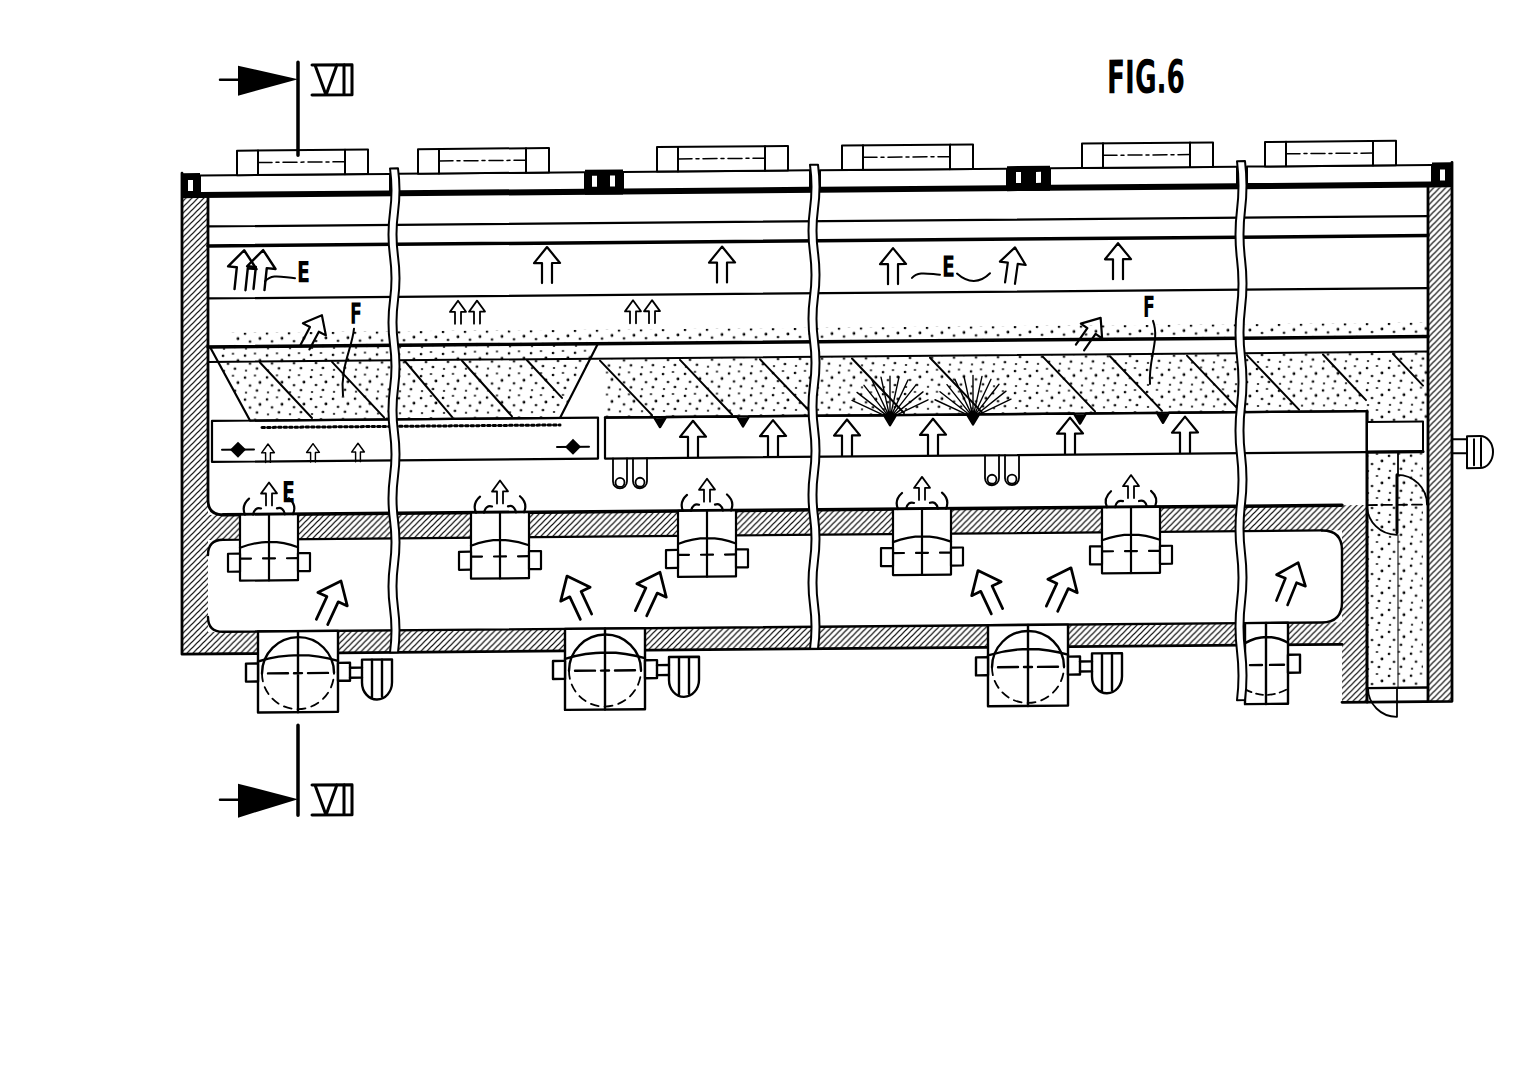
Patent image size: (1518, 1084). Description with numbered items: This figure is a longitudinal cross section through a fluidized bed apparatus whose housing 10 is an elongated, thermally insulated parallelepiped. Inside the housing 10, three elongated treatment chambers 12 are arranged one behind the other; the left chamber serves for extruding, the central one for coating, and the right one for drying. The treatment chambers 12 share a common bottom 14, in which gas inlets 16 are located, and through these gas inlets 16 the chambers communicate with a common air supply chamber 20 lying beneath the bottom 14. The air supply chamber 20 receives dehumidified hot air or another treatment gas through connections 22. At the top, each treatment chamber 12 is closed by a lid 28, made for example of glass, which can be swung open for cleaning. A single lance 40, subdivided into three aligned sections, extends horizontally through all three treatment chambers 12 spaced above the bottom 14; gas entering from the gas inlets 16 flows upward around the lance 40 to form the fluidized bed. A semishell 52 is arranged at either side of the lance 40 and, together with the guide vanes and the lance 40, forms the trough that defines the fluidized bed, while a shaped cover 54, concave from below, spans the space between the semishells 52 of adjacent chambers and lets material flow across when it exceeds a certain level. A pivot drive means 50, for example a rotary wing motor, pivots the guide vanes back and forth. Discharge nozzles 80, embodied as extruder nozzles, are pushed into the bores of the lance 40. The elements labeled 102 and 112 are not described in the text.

The housing 10 is at (170, 208).
The treatment chamber 12 is at (457, 286).
The bottom 14 is at (437, 545).
The gas inlet 16 is at (249, 582).
The air supply chamber 20 is at (852, 593).
The connection 22 is at (258, 702).
The lid 28 is at (378, 180).
The lance 40 is at (458, 453).
The pivot drive means 50 is at (1476, 477).
The semishell 52 is at (238, 378).
The shaped cover 54 is at (895, 357).
The discharge nozzle 80 is at (333, 432).
The spray nozzles 102 is at (543, 355).
The discharge channel 112 is at (1385, 710).